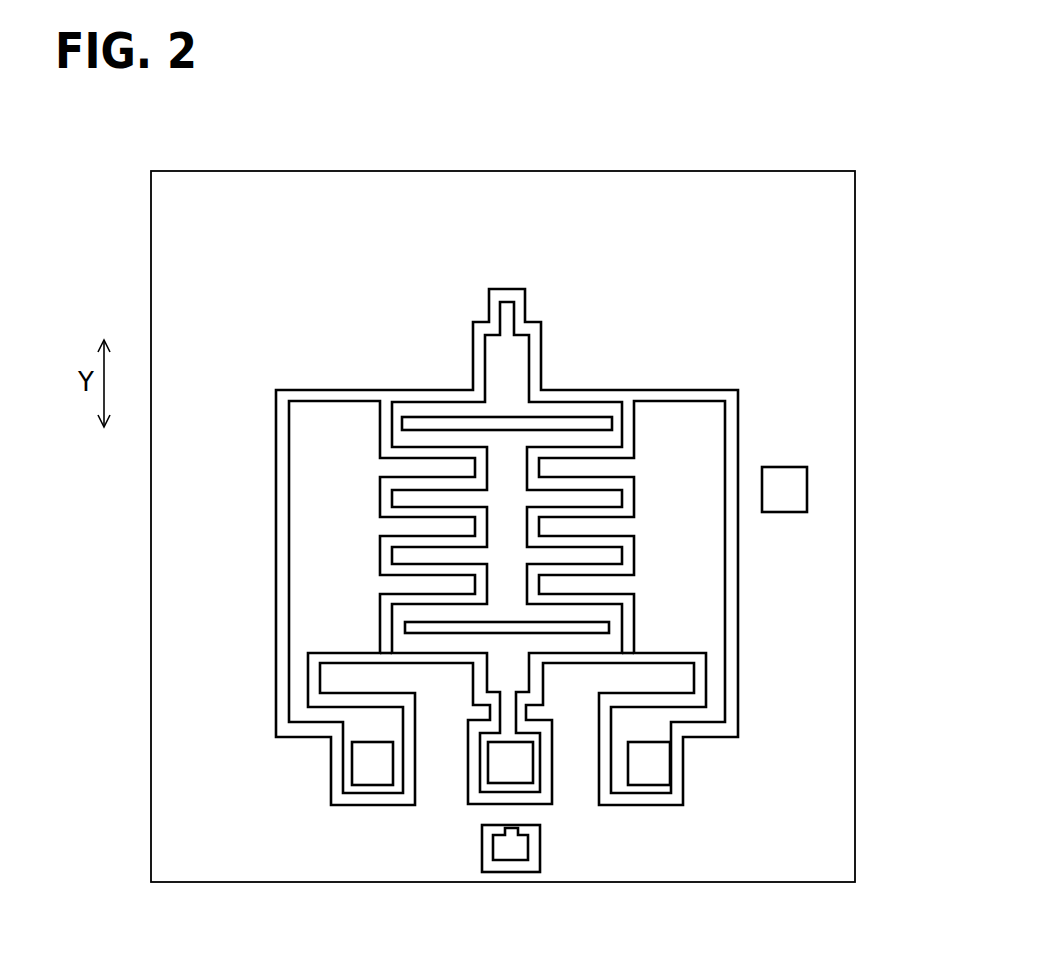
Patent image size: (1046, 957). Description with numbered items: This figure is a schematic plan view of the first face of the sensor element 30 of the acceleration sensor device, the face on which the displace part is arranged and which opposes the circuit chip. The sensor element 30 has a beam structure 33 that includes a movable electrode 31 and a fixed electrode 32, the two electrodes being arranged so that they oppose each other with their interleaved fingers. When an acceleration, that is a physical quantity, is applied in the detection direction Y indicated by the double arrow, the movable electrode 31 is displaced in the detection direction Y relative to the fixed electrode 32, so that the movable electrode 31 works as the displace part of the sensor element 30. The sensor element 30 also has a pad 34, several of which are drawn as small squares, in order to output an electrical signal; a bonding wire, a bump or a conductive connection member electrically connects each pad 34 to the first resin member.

The sensor element 30 is at (307, 171).
The movable electrode 31 is at (414, 498).
The fixed electrode 32 is at (414, 527).
The beam structure 33 is at (507, 388).
The pad 34 is at (782, 488).